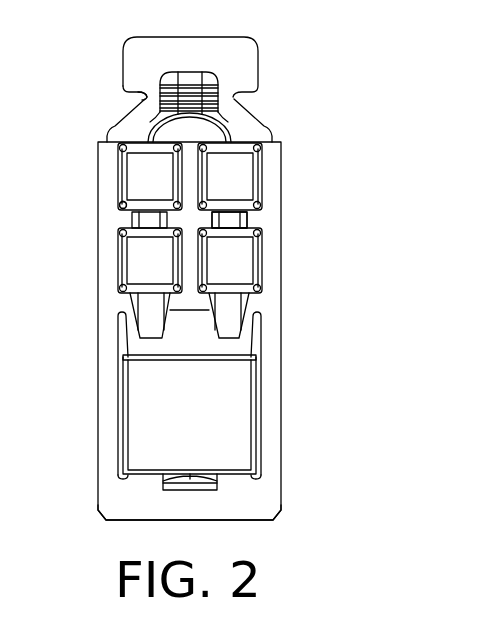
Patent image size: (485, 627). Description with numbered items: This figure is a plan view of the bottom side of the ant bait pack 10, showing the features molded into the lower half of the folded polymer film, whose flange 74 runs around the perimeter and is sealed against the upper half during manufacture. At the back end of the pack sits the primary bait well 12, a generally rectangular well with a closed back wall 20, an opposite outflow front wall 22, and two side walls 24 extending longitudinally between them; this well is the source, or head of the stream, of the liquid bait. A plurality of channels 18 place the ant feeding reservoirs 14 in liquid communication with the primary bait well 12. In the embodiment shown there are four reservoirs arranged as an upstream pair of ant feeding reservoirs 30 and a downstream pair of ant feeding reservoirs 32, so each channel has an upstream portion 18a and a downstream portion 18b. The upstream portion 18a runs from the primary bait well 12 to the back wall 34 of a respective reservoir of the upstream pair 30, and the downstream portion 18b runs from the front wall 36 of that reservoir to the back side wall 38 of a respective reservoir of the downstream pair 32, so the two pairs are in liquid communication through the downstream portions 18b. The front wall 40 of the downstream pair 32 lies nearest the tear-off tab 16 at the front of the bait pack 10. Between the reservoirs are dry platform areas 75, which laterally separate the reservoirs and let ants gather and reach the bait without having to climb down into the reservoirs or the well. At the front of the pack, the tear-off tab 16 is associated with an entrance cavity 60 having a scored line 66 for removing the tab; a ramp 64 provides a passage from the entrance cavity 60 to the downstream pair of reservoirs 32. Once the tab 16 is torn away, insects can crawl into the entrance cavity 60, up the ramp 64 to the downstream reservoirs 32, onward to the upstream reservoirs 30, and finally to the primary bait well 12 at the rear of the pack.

The ant bait pack 10 is at (273, 25).
The primary bait well 12 is at (205, 427).
The ant feeding reservoirs 14 is at (274, 178).
The tear-off tab 16 is at (138, 65).
The channels 18 is at (120, 217).
The upstream portion of channel 18a is at (147, 321).
The downstream portion of channel 18b is at (235, 221).
The closed back wall 20 is at (140, 476).
The outflow front wall 22 is at (252, 349).
The side walls 24 is at (118, 424).
The upstream pair of ant feeding reservoirs 30 is at (278, 273).
The downstream pair of ant feeding reservoirs 32 is at (115, 160).
The back wall of upstream reservoir 34 is at (120, 290).
The front wall of upstream reservoir 36 is at (120, 229).
The back side wall of downstream reservoir 38 is at (118, 205).
The front wall of downstream reservoir 40 is at (230, 160).
The entrance cavity 60 is at (232, 81).
The ramp 64 is at (205, 133).
The scored line 66 is at (149, 96).
The flange of lower half 74 is at (266, 513).
The dry platform areas 75 is at (187, 168).